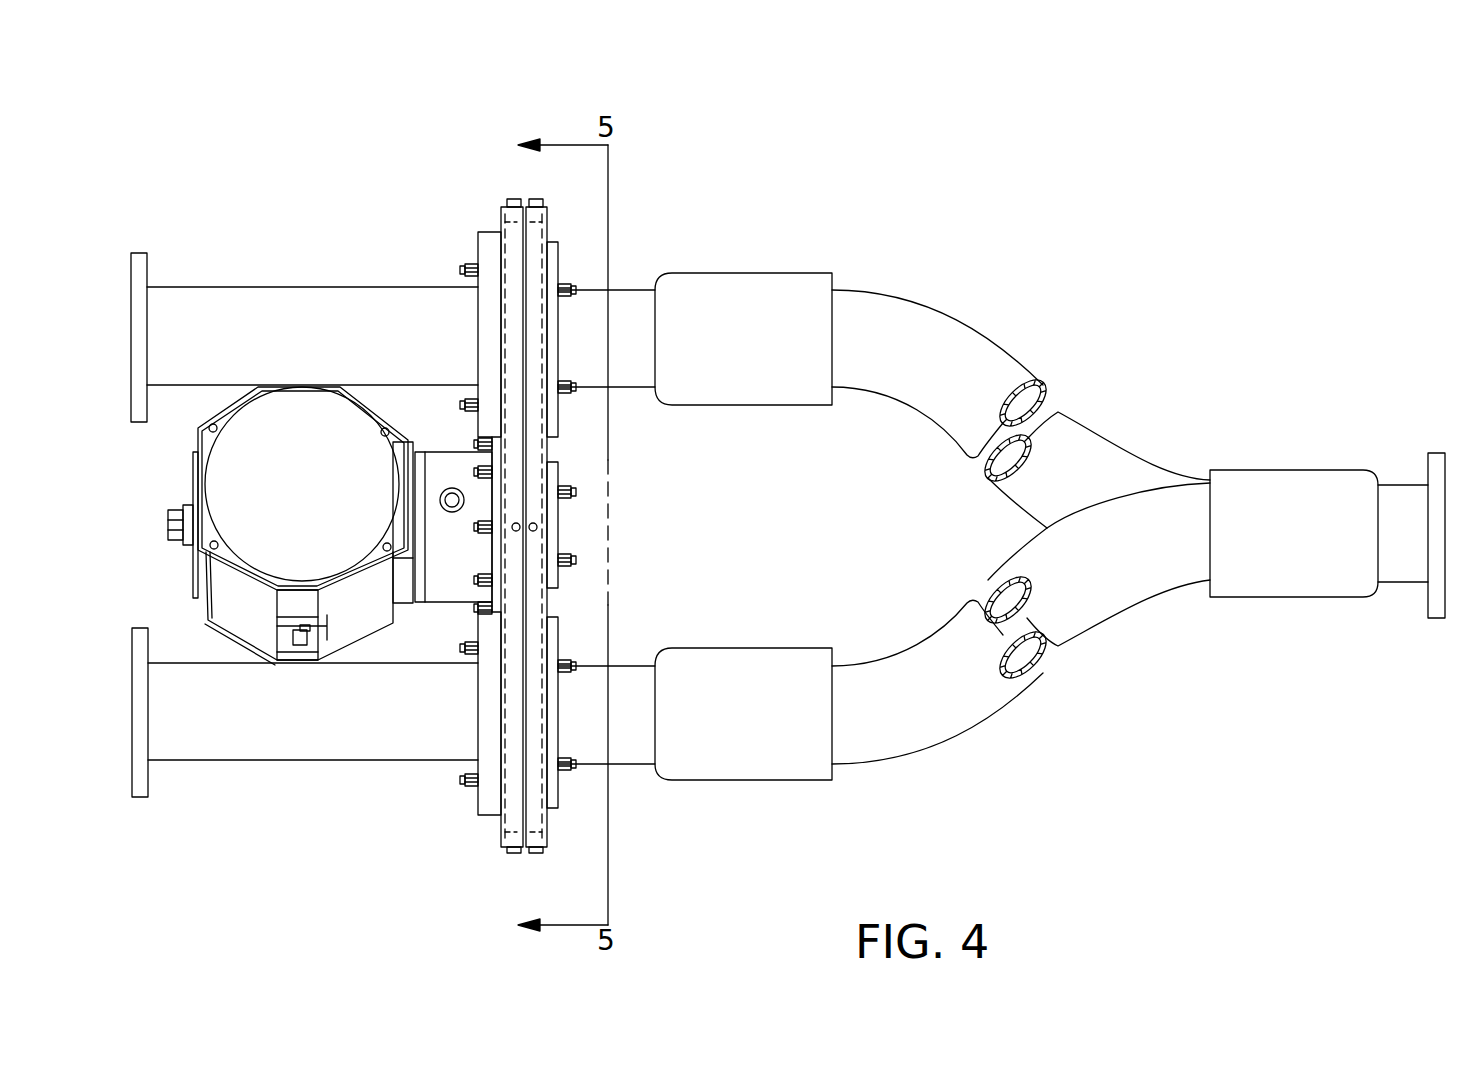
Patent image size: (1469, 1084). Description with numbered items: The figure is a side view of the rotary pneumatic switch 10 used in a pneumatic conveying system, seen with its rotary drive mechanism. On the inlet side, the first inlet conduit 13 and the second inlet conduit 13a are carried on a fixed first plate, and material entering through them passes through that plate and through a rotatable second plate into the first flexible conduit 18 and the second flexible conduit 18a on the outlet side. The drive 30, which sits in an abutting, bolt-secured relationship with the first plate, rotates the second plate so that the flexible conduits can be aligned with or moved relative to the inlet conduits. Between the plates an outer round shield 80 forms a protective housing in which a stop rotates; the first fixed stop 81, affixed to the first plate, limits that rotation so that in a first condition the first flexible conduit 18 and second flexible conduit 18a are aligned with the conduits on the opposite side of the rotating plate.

The pneumatic switch 10 is at (1071, 363).
The first inlet conduit 13 is at (310, 287).
The second inlet conduit 13a is at (296, 762).
The first flexible conduit 18 is at (627, 290).
The second flexible conduit 18a is at (638, 666).
The drive 30 is at (168, 523).
The outer round shield 80 is at (504, 201).
The first fixed stop 81 is at (540, 201).